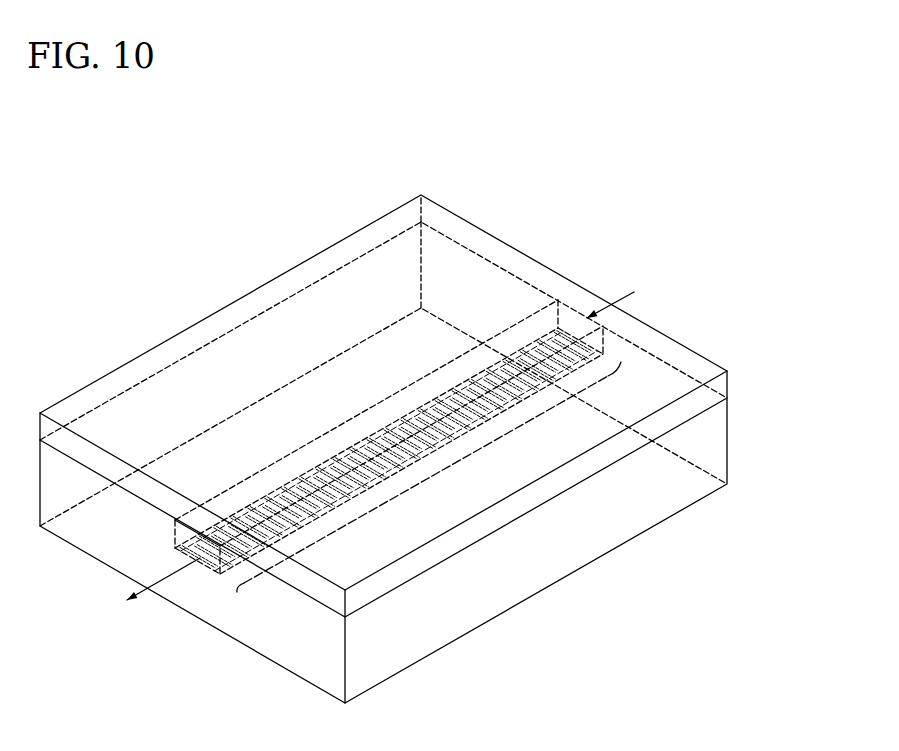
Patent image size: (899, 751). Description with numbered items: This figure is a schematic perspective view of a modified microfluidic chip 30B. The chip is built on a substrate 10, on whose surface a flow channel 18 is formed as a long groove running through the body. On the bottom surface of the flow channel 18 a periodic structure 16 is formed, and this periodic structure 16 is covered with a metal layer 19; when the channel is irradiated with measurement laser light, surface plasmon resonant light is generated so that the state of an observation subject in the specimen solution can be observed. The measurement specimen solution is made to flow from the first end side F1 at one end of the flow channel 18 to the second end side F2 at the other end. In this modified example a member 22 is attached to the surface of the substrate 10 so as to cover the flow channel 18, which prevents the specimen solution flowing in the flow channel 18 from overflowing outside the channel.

The microfluidic chip 30B is at (547, 195).
The substrate 10 is at (708, 443).
The member 22 is at (683, 355).
The periodic structure 16 is at (449, 470).
The flow channel 18 is at (433, 372).
The metal layer 19 is at (403, 418).
The first end side F1 is at (627, 287).
The second end side F2 is at (146, 594).